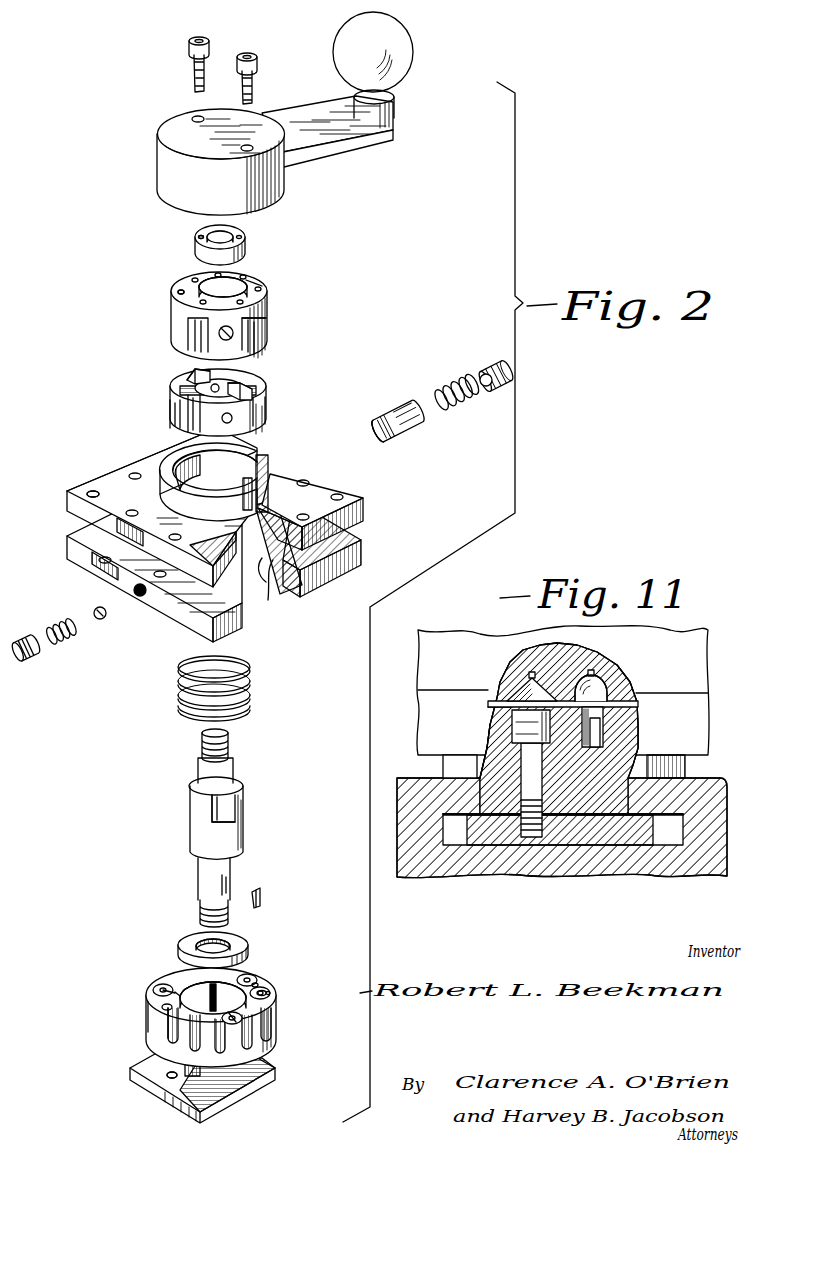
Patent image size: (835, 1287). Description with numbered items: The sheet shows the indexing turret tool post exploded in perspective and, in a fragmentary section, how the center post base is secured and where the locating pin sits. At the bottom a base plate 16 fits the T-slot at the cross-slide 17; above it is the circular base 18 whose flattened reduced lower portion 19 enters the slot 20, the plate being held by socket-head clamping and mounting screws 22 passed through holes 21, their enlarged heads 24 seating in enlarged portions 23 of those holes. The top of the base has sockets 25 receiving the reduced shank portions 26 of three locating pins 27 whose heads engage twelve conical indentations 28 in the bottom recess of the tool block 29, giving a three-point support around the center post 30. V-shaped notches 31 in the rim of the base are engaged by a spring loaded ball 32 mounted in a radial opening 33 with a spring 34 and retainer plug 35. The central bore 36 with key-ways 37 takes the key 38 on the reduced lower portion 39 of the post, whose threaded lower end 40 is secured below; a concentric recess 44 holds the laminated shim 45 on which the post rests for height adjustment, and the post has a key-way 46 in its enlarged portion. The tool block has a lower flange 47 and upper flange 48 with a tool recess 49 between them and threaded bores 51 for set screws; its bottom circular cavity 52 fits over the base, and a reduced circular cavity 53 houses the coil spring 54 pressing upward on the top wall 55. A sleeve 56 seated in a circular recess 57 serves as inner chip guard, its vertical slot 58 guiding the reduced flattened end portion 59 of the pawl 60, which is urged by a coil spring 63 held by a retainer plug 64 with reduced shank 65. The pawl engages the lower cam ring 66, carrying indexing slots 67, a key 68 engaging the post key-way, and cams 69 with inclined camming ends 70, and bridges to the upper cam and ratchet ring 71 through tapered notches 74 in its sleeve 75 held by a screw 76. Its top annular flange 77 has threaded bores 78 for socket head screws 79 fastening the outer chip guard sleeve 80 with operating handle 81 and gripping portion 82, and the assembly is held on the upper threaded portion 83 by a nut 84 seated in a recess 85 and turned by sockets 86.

In FIG. 2, the base plate 16 is at (268, 1069).
In FIG. 11, the base plate 16 is at (625, 840).
In FIG. 11, the cross-slide 17 is at (706, 862).
In FIG. 2, the base 18 is at (264, 1040).
In FIG. 11, the base 18 is at (682, 770).
In FIG. 2, the reduced lower portion 19 is at (160, 1060).
In FIG. 11, the reduced lower portion 19 is at (606, 790).
In FIG. 11, the slot 20 is at (490, 783).
In FIG. 11, the holes 21 is at (488, 752).
In FIG. 2, the clamping and mounting screws 22 is at (272, 992).
In FIG. 11, the clamping and mounting screws 22 is at (533, 850).
In FIG. 2, the enlarged portions 23 is at (162, 1006).
In FIG. 11, the enlarged portions 23 is at (492, 709).
In FIG. 2, the enlarged heads 24 is at (172, 990).
In FIG. 11, the enlarged heads 24 is at (508, 727).
In FIG. 11, the sockets 25 is at (604, 720).
In FIG. 11, the reduced shank portions 26 is at (604, 740).
In FIG. 2, the locating pins 27 is at (155, 986).
In FIG. 11, the locating pins 27 is at (607, 696).
In FIG. 2, the conical indentations 28 is at (268, 600).
In FIG. 11, the conical indentations 28 is at (521, 689).
In FIG. 2, the tool block 29 is at (374, 512).
In FIG. 11, the tool block 29 is at (691, 637).
In FIG. 2, the center post 30 is at (196, 832).
In FIG. 2, the V-shaped notches 31 is at (166, 1018).
In FIG. 2, the spring loaded ball 32 is at (95, 609).
In FIG. 2, the radial opening 33 is at (140, 598).
In FIG. 2, the spring 34 is at (68, 640).
In FIG. 2, the retainer plug 35 is at (30, 660).
In FIG. 2, the central bore 36 is at (258, 984).
In FIG. 2, the key-ways 37 is at (246, 977).
In FIG. 2, the key 38 is at (262, 890).
In FIG. 2, the reduced lower portion 39 is at (200, 884).
In FIG. 2, the threaded lower end 40 is at (202, 914).
In FIG. 2, the concentric recess 44 is at (175, 988).
In FIG. 2, the laminated shim 45 is at (238, 934).
In FIG. 2, the key-way 46 is at (236, 808).
In FIG. 2, the lower flange 47 is at (363, 560).
In FIG. 2, the upper flange 48 is at (320, 490).
In FIG. 2, the recess 49 is at (372, 537).
In FIG. 2, the threaded bores 51 is at (95, 489).
In FIG. 2, the bottom circular cavity 52 is at (292, 592).
In FIG. 11, the bottom circular cavity 52 is at (495, 701).
In FIG. 2, the reduced circular cavity 53 is at (262, 558).
In FIG. 2, the coil spring 54 is at (252, 691).
In FIG. 2, the top wall 55 is at (236, 531).
In FIG. 2, the sleeve 56 is at (262, 474).
In FIG. 2, the circular recess 57 is at (290, 505).
In FIG. 2, the vertical slot 58 is at (278, 474).
In FIG. 2, the reduced flattened end portion 59 is at (378, 428).
In FIG. 2, the pawl 60 is at (411, 429).
In FIG. 2, the coil spring 63 is at (452, 404).
In FIG. 2, the retainer plug 64 is at (494, 365).
In FIG. 2, the reduced shank 65 is at (481, 374).
In FIG. 2, the lower cam ring 66 is at (266, 392).
In FIG. 2, the indexing slots 67 is at (188, 378).
In FIG. 2, the key 68 is at (180, 408).
In FIG. 2, the cams 69 is at (198, 370).
In FIG. 2, the inclined camming ends 70 is at (190, 385).
In FIG. 2, the upper cam and ratchet ring 71 is at (178, 303).
In FIG. 2, the tapered notches 74 is at (200, 332).
In FIG. 2, the sleeve 75 is at (266, 312).
In FIG. 2, the screw 76 is at (233, 335).
In FIG. 2, the top annular flange 77 is at (262, 286).
In FIG. 2, the threaded bores 78 is at (190, 277).
In FIG. 2, the socket head screws 79 is at (248, 52).
In FIG. 2, the outer chip guard sleeve 80 is at (170, 173).
In FIG. 2, the operating handle 81 is at (338, 138).
In FIG. 2, the gripping portion 82 is at (412, 55).
In FIG. 2, the upper threaded portion 83 is at (232, 745).
In FIG. 2, the nut 84 is at (246, 254).
In FIG. 2, the recess 85 is at (240, 285).
In FIG. 2, the sockets 86 is at (196, 234).